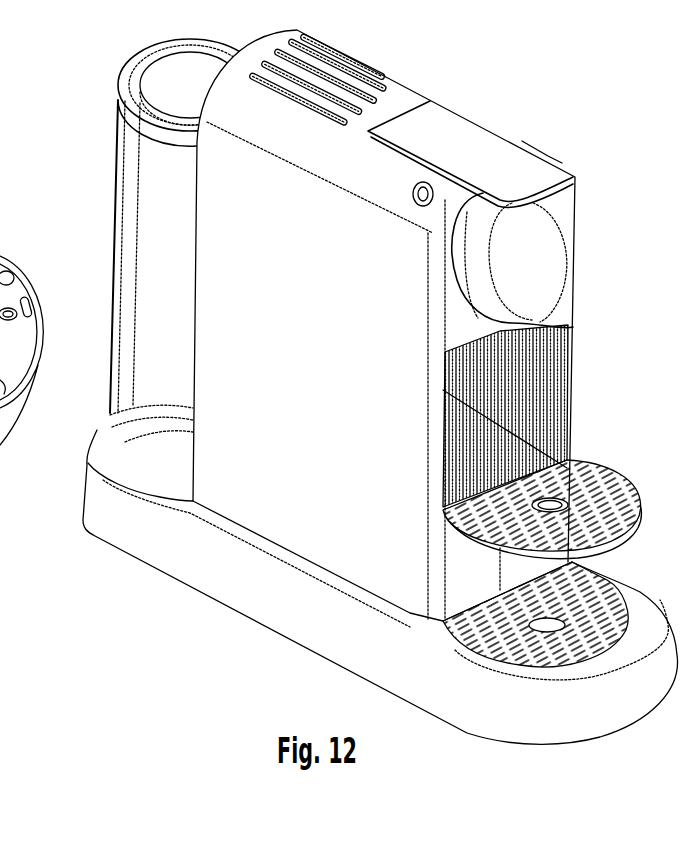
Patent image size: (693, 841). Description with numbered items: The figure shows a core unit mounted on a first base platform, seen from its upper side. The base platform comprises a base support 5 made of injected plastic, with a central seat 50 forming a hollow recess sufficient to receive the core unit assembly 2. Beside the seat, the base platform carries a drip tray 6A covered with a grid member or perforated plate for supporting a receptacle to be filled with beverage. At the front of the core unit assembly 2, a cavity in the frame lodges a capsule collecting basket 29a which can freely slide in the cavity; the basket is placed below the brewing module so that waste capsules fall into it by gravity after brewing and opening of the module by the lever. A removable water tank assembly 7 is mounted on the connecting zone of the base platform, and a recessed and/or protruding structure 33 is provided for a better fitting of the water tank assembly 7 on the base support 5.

The core unit assembly 2 is at (495, 112).
The water tank assembly 7 is at (108, 218).
The recessed and/or protruding structure 33 is at (112, 471).
The seat 50 is at (307, 548).
The capsule collecting basket 29a is at (548, 394).
The drip tray 6A is at (627, 497).
The base support 5 is at (498, 742).